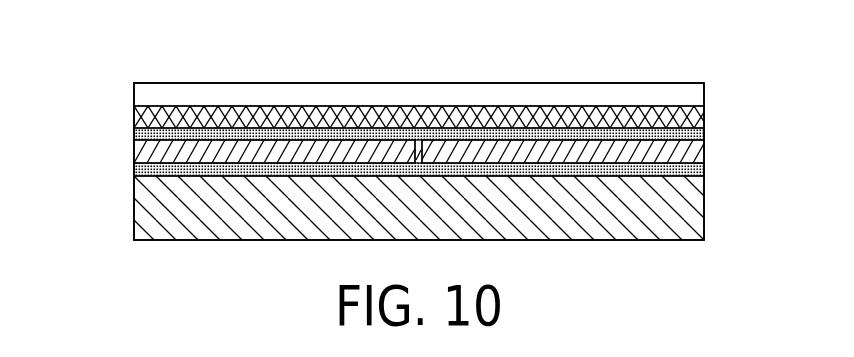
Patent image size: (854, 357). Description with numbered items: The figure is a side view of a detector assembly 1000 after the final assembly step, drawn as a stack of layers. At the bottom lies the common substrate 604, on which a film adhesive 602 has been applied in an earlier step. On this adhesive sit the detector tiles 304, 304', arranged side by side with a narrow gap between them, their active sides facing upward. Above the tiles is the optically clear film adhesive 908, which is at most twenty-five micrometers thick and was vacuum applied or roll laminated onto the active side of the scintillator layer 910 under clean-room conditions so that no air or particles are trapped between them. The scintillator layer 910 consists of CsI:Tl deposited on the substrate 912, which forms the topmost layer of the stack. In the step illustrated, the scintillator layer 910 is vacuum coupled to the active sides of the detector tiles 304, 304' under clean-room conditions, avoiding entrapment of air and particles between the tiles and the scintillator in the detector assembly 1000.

The detector assembly 1000 is at (592, 62).
The substrate 912 is at (697, 93).
The scintillator layer 910 is at (700, 119).
The optically clear film adhesive 908 is at (134, 134).
The detector tile 304 is at (235, 149).
The detector tile 304' is at (602, 149).
The film adhesive 602 is at (134, 170).
The common substrate 604 is at (138, 221).